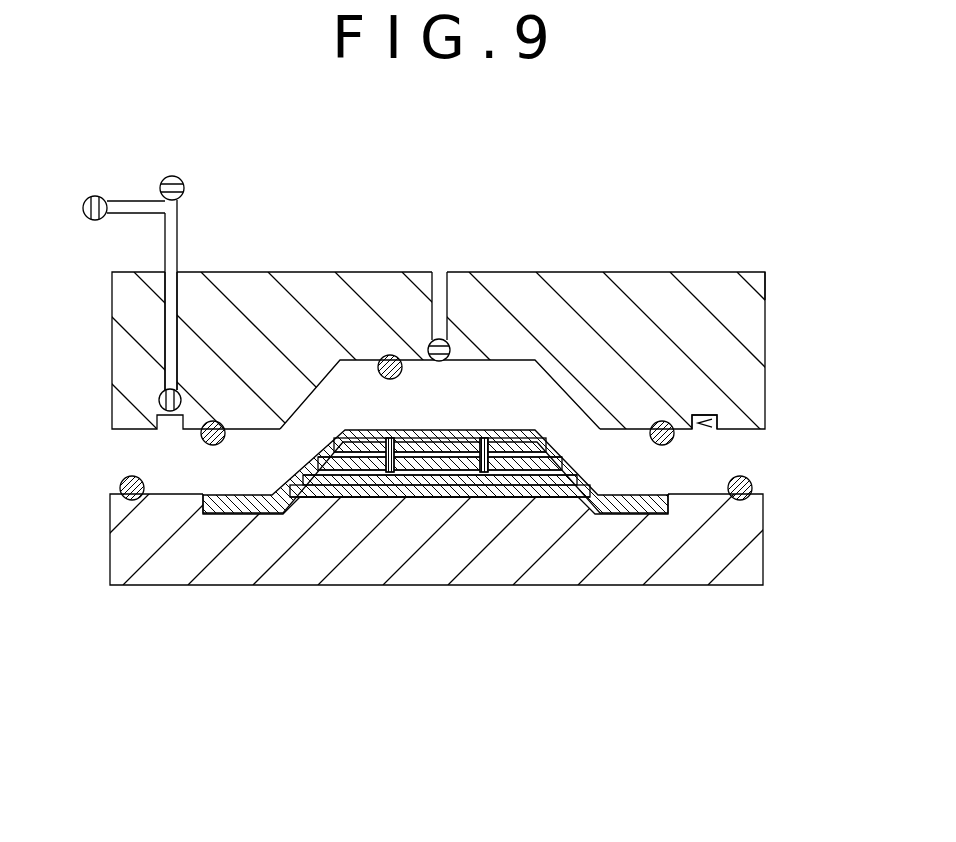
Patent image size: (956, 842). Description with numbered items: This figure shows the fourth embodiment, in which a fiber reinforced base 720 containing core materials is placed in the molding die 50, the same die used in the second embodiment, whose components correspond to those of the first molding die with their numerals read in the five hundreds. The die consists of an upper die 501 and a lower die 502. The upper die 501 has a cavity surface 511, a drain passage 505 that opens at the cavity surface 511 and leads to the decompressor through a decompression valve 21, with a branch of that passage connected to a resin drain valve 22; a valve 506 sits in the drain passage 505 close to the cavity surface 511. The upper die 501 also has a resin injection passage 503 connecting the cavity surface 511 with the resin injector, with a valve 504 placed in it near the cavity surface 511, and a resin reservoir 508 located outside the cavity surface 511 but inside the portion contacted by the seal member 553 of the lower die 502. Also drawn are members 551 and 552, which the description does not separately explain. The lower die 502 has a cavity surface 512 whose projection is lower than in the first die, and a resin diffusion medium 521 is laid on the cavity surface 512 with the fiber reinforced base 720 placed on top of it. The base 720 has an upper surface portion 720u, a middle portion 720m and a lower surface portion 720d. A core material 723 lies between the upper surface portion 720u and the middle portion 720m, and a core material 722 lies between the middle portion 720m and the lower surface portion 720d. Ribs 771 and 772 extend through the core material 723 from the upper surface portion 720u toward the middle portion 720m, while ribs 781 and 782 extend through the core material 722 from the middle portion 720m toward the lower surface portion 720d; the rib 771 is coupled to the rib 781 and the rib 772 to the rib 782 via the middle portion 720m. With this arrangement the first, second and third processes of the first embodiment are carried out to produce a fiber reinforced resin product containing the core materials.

The decompression valve 21 is at (176, 176).
The resin drain valve 22 is at (88, 198).
The molding die 50 is at (727, 203).
The upper die 501 is at (637, 290).
The lower die 502 is at (406, 572).
The resin injection passage 503 is at (441, 257).
The valve 504 is at (450, 345).
The drain passage 505 is at (175, 305).
The valve 506 is at (150, 386).
The resin reservoir 508 is at (722, 418).
The cavity surface 511 is at (505, 358).
The cavity surface 512 is at (312, 517).
The resin diffusion medium 521 is at (600, 510).
The seal member 551 is at (390, 355).
The O-ring 552 is at (213, 421).
The seal member 553 is at (132, 500).
The fiber reinforced base 720 is at (228, 515).
The upper surface portion 720u is at (340, 427).
The middle portion 720m is at (360, 472).
The lower surface portion 720d is at (492, 484).
The core material 722 is at (533, 480).
The core material 723 is at (540, 486).
The rib 771 is at (400, 452).
The rib 772 is at (470, 472).
The rib 781 is at (389, 438).
The rib 782 is at (487, 440).